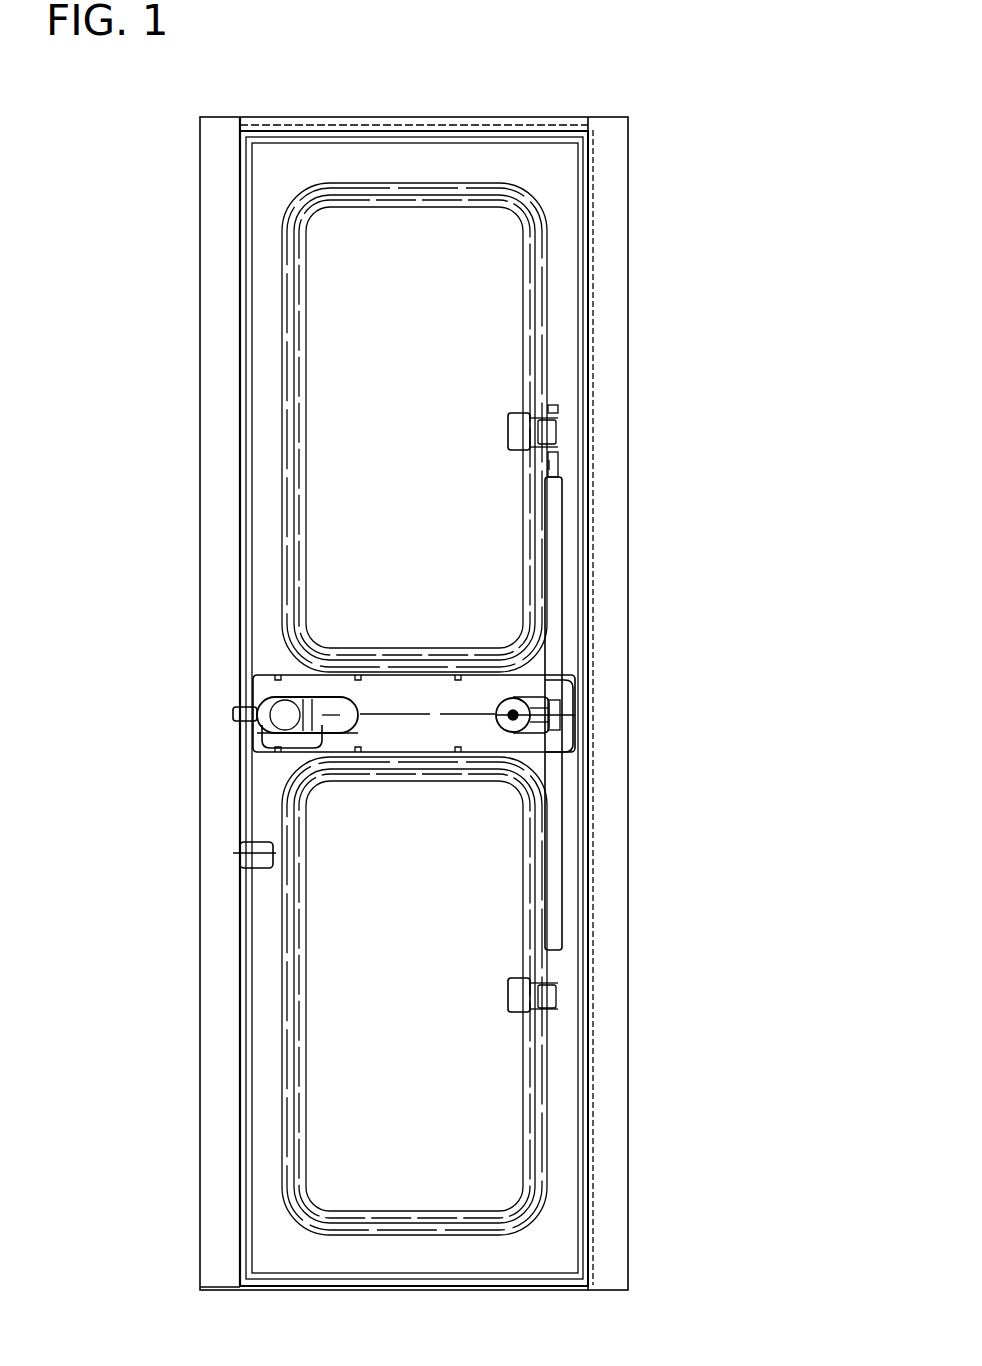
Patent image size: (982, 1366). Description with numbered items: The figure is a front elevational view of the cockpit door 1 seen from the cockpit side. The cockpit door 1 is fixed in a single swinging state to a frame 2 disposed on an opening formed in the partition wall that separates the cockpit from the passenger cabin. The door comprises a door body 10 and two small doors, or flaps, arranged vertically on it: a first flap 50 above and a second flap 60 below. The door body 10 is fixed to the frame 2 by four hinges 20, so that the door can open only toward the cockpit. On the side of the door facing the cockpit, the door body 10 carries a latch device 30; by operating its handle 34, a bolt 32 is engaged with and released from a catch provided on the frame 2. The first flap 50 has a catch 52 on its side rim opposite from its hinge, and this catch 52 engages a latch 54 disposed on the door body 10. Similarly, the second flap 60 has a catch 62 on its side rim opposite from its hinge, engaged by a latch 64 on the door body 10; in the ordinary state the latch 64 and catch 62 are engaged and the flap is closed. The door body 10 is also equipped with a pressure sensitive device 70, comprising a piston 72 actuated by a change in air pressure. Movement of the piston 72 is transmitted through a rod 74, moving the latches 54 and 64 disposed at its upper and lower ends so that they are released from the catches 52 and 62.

The cockpit door 1 is at (502, 0).
The frame 2 is at (218, 532).
The door body 10 is at (545, 163).
The hinges 20 is at (593, 183).
The latch device 30 is at (245, 727).
The bolt 32 is at (233, 712).
The handle 34 is at (275, 697).
The first flap 50 is at (435, 454).
The catch 52 is at (530, 418).
The latch 54 is at (540, 433).
The second flap 60 is at (422, 993).
The catch 62 is at (555, 1013).
The latch 64 is at (540, 990).
The pressure sensitive device 70 is at (596, 705).
The piston 72 is at (560, 737).
The rod 74 is at (555, 618).